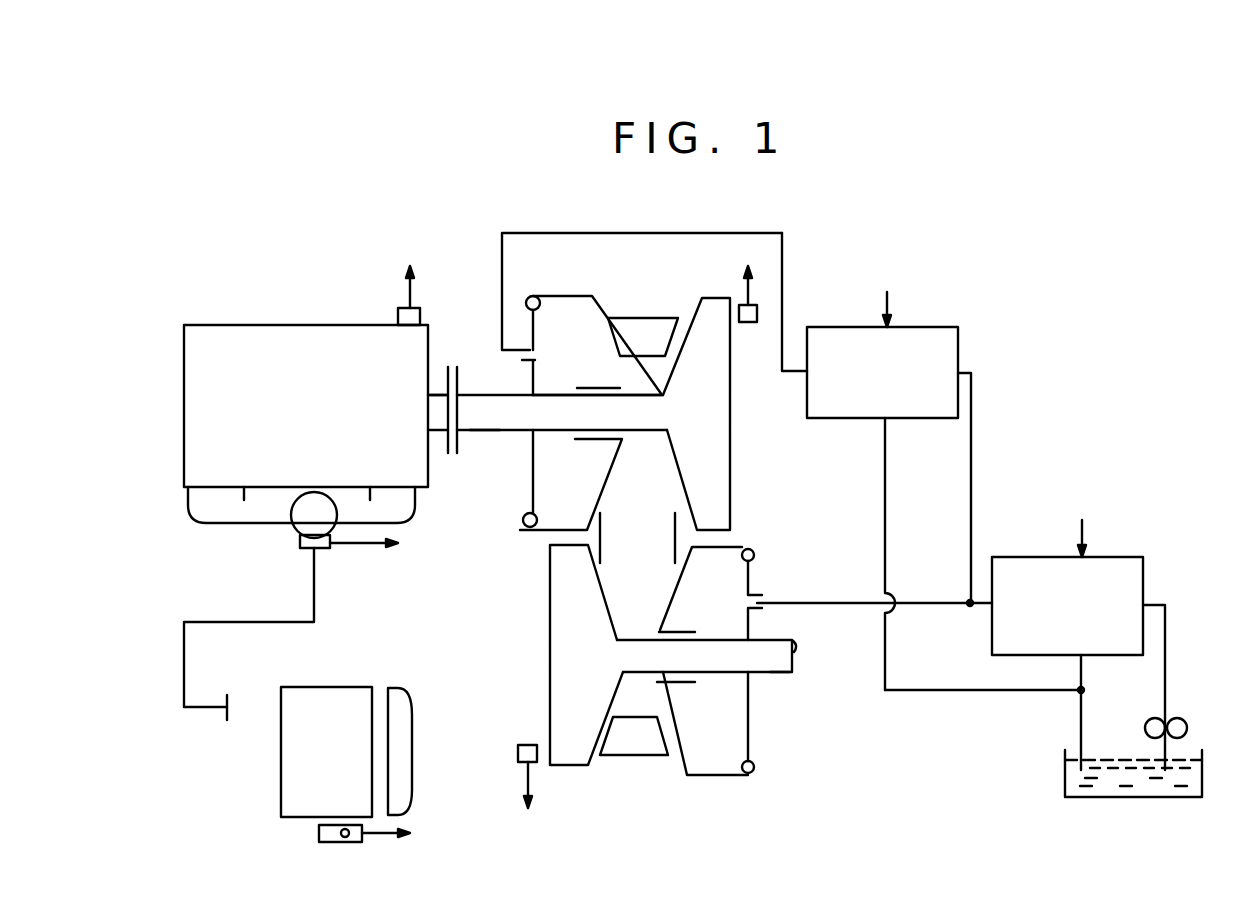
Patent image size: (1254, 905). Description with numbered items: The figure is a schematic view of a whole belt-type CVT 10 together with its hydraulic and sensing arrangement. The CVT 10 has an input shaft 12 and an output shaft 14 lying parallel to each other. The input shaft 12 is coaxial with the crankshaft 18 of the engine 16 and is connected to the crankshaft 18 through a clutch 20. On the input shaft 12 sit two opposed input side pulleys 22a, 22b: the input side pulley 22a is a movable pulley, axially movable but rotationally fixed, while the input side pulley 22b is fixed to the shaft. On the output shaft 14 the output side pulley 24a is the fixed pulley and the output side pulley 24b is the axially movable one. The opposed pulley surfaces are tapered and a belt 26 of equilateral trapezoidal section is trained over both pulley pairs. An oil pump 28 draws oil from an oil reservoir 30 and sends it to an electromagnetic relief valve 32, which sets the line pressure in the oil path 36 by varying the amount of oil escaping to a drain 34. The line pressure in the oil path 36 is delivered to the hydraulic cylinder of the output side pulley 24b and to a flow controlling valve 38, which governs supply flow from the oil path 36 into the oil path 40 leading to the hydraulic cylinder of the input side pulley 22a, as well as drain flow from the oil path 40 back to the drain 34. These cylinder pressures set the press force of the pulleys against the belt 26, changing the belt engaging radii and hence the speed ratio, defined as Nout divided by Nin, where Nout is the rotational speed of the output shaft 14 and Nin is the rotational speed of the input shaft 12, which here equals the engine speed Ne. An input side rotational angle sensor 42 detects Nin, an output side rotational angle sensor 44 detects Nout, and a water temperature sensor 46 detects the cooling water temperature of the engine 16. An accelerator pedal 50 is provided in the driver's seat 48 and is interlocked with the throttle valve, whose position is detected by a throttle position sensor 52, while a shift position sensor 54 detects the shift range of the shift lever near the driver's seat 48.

The CVT 10 is at (688, 258).
The input shaft 12 is at (486, 410).
The output shaft 14 is at (762, 665).
The engine 16 is at (276, 348).
The crankshaft 18 is at (438, 420).
The clutch 20 is at (458, 393).
The input side pulley 22a is at (561, 318).
The input side pulley 22b is at (703, 507).
The output side pulley 24a is at (570, 752).
The output side pulley 24b is at (720, 742).
The belt 26 is at (645, 338).
The oil pump 28 is at (1188, 732).
The oil reservoir 30 is at (1192, 782).
The relief valve 32 is at (1110, 557).
The drain 34 is at (1078, 737).
The oil path 36 is at (973, 545).
The flow controlling valve 38 is at (961, 372).
The oil path 40 is at (786, 298).
The input side rotational angle sensor 42 is at (748, 323).
The output side rotational angle sensor 44 is at (516, 757).
The water temperature sensor 46 is at (397, 318).
The driver's seat 48 is at (338, 710).
The accelerator pedal 50 is at (229, 705).
The throttle position sensor 52 is at (298, 533).
The shift position sensor 54 is at (318, 832).
The engine speed Ne is at (442, 388).
The input shaft rotational speed Nin is at (508, 420).
The output shaft rotational speed Nout is at (773, 652).